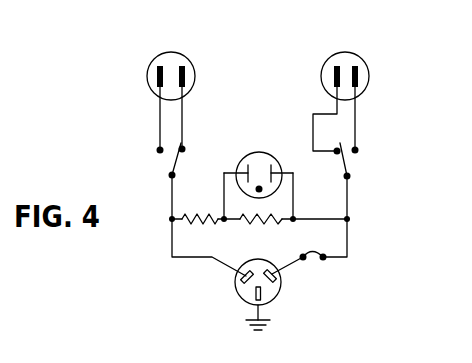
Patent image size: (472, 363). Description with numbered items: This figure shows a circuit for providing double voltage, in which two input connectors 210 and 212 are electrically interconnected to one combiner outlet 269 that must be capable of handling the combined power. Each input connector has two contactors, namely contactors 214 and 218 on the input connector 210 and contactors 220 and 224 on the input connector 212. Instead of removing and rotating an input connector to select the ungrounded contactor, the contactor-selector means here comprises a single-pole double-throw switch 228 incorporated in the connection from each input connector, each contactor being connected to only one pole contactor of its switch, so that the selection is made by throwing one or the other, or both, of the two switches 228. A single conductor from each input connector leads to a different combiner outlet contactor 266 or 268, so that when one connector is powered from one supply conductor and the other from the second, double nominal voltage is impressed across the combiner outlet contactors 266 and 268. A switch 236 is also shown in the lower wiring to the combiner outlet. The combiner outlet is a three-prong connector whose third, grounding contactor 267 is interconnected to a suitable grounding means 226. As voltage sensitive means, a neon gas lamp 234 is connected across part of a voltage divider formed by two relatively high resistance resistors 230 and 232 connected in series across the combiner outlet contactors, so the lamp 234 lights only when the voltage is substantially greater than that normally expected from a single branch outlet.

The input connector 210 is at (170, 51).
The input connector 212 is at (344, 51).
The contactor 214 is at (154, 68).
The input contactor 218 is at (188, 68).
The input contactor 220 is at (328, 68).
The contactor 224 is at (362, 68).
The single-pole double-throw switch 228 is at (172, 164).
The neon gas lamp 234 is at (258, 152).
The resistor 230 is at (199, 225).
The resistor 232 is at (261, 225).
The switch 236 is at (313, 253).
The combiner outlet contactor 266 is at (236, 280).
The grounding contactor 267 is at (250, 295).
The combiner outlet contactor 268 is at (283, 283).
The combiner outlet 269 is at (280, 298).
The grounding means 226 is at (268, 327).